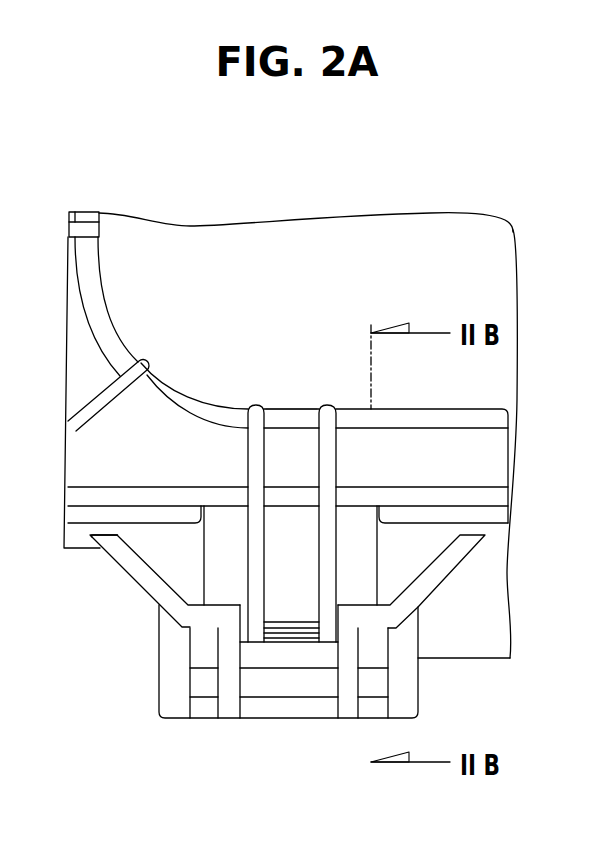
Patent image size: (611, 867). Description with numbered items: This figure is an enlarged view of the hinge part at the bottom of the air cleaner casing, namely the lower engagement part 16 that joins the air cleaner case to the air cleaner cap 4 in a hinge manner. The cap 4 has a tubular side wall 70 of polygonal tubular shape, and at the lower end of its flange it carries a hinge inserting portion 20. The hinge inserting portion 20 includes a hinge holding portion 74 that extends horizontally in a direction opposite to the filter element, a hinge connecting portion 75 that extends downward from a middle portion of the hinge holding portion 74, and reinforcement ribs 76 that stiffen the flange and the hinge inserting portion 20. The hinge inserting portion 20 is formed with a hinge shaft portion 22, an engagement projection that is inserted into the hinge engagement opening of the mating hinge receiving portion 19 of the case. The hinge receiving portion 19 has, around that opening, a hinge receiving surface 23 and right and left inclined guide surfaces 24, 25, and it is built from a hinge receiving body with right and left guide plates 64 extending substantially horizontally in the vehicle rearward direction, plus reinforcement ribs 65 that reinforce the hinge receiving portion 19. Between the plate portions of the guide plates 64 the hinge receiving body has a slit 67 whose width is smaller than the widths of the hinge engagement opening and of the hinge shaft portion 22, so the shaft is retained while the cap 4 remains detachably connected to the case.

The air cleaner cap 4 is at (298, 240).
The tubular side wall 70 is at (290, 398).
The hinge holding portion 74 is at (458, 490).
The inclined guide surface 24 is at (152, 563).
The inclined guide surface 25 is at (425, 568).
The hinge receiving surface 23 is at (214, 602).
The hinge connecting portion 75 is at (292, 530).
The guide plates 64 is at (128, 550).
The reinforcement ribs 65 is at (420, 708).
The hinge receiving portion 19 is at (134, 682).
The lower engagement part 16 is at (134, 737).
The reinforcement ribs 76 is at (250, 583).
The hinge inserting portion 20 is at (278, 658).
The hinge shaft portion 22 is at (295, 613).
The slit 67 is at (340, 648).